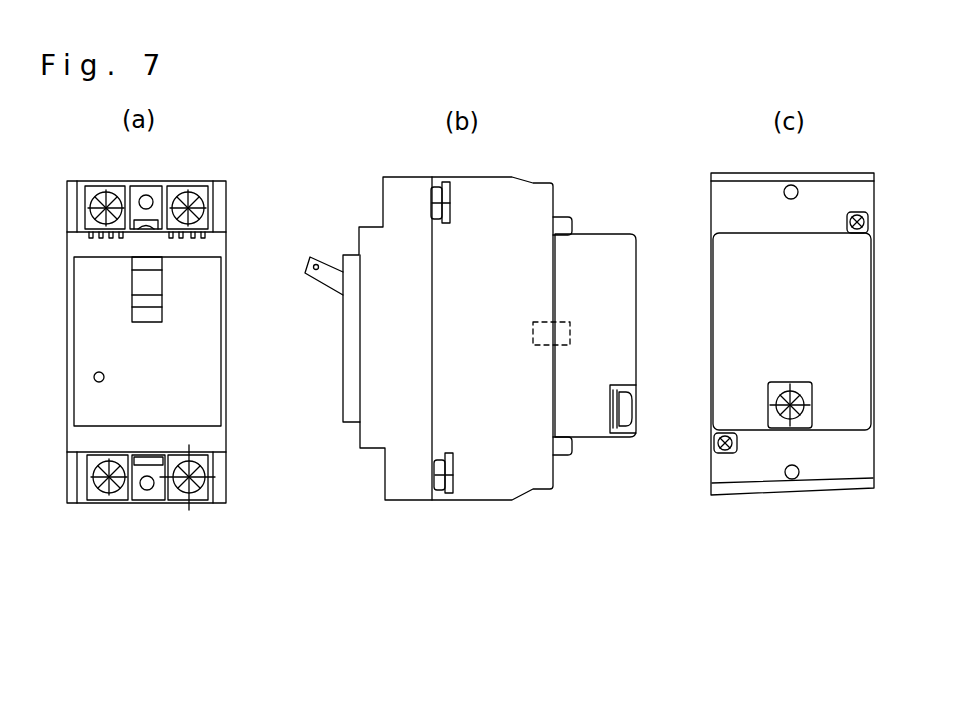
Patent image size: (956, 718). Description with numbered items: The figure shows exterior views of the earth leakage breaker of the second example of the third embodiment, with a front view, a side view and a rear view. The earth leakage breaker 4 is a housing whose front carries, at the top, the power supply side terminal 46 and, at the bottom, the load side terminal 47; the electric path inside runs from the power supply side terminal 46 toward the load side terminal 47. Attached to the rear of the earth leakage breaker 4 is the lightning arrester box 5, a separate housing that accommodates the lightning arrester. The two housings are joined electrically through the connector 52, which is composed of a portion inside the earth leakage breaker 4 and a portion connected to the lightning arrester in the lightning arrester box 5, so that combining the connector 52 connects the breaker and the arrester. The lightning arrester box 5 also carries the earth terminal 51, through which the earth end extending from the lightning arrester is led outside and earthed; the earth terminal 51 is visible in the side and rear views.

The earth leakage breaker 4 is at (343, 357).
The lightning arrester box 5 is at (727, 263).
The power supply side terminal 46 is at (420, 205).
The load side terminal 47 is at (425, 480).
The earth terminal 51 is at (760, 403).
The connector 52 is at (570, 342).